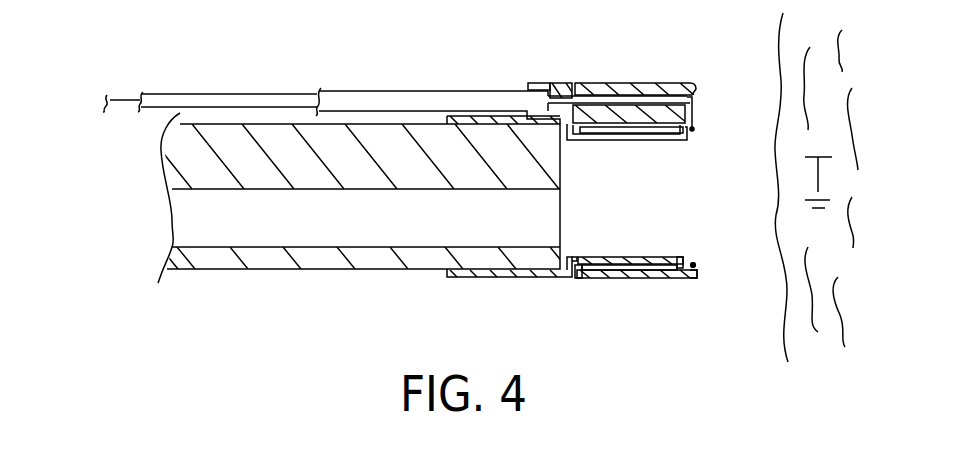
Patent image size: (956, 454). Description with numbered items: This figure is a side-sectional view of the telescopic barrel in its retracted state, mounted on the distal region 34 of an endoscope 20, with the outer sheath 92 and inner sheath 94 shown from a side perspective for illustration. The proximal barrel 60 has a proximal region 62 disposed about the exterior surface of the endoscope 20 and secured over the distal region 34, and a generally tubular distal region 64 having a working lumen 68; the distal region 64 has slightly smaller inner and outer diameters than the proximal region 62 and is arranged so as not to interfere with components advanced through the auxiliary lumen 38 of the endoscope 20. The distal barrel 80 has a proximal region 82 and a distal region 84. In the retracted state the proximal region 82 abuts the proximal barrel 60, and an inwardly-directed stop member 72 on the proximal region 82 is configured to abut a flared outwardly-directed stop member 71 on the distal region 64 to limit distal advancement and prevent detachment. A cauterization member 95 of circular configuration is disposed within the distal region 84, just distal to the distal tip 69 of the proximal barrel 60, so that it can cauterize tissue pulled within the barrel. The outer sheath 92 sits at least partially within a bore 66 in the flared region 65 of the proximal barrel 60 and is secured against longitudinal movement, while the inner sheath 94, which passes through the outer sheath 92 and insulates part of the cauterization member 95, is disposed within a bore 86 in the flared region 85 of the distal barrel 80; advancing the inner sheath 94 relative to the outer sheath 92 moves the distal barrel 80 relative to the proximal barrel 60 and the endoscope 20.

The endoscope 20 is at (212, 284).
The distal region of the endoscope 34 is at (323, 263).
The auxiliary lumen 38 is at (277, 233).
The proximal barrel 60 is at (496, 287).
The proximal region of the proximal barrel 62 is at (470, 280).
The distal region of the proximal barrel 64 is at (620, 135).
The flared region of the proximal barrel 65 is at (537, 83).
The bore 66 is at (563, 86).
The working lumen 68 is at (677, 174).
The distal tip of the proximal barrel 69 is at (688, 262).
The outwardly-directed stop member 71 is at (677, 263).
The inwardly-directed stop member 72 is at (578, 280).
The distal barrel 80 is at (646, 287).
The proximal region of the distal barrel 82 is at (588, 280).
The distal region of the distal barrel 84 is at (692, 282).
The flared region of the distal barrel 85 is at (615, 91).
The bore 86 is at (693, 95).
The outer sheath 92 is at (418, 100).
The inner sheath 94 is at (217, 102).
The cauterization member 95 is at (118, 98).